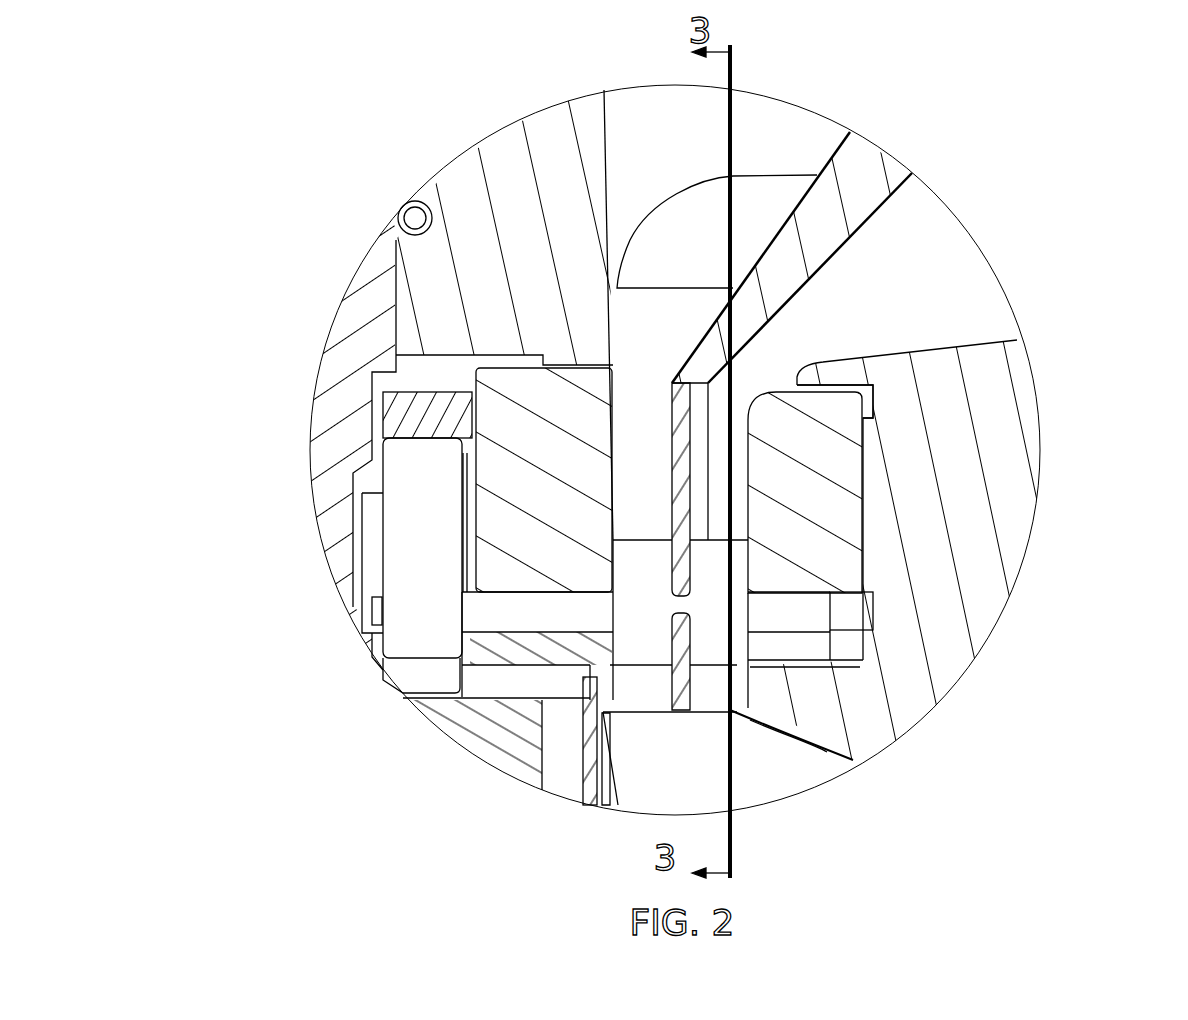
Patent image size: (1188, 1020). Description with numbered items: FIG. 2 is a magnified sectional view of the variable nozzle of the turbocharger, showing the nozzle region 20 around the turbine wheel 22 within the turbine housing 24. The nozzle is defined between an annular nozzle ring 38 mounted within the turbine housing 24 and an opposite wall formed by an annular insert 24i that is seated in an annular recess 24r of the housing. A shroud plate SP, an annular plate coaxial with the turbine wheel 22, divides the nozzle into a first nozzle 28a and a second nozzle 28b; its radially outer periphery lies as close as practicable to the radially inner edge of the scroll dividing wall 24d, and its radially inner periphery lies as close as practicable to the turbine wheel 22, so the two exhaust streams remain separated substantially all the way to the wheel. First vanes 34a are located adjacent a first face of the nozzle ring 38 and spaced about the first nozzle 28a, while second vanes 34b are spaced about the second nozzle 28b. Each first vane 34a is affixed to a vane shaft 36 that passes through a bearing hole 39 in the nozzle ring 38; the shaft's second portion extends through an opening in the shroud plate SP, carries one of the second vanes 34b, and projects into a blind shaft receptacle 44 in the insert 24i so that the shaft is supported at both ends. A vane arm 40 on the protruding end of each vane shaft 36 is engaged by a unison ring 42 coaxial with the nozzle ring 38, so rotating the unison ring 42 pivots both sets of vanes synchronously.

The housing 20 is at (363, 293).
The turbine wheel 22 is at (763, 777).
The turbine housing 24 is at (457, 177).
The scroll dividing wall 24d is at (787, 277).
The annular recess 24r is at (838, 407).
The annular insert 24i is at (830, 505).
The first nozzle 28a is at (640, 383).
The second nozzle 28b is at (748, 355).
The first vanes 34a is at (637, 570).
The second vanes 34b is at (708, 648).
The vane shaft 36 is at (583, 617).
The nozzle ring 38 is at (545, 508).
The bearing hole 39 is at (462, 694).
The vane arm 40 is at (413, 475).
The unison ring 42 is at (427, 408).
The blind shaft receptacles 44 is at (830, 607).
The shroud plate SP is at (683, 440).